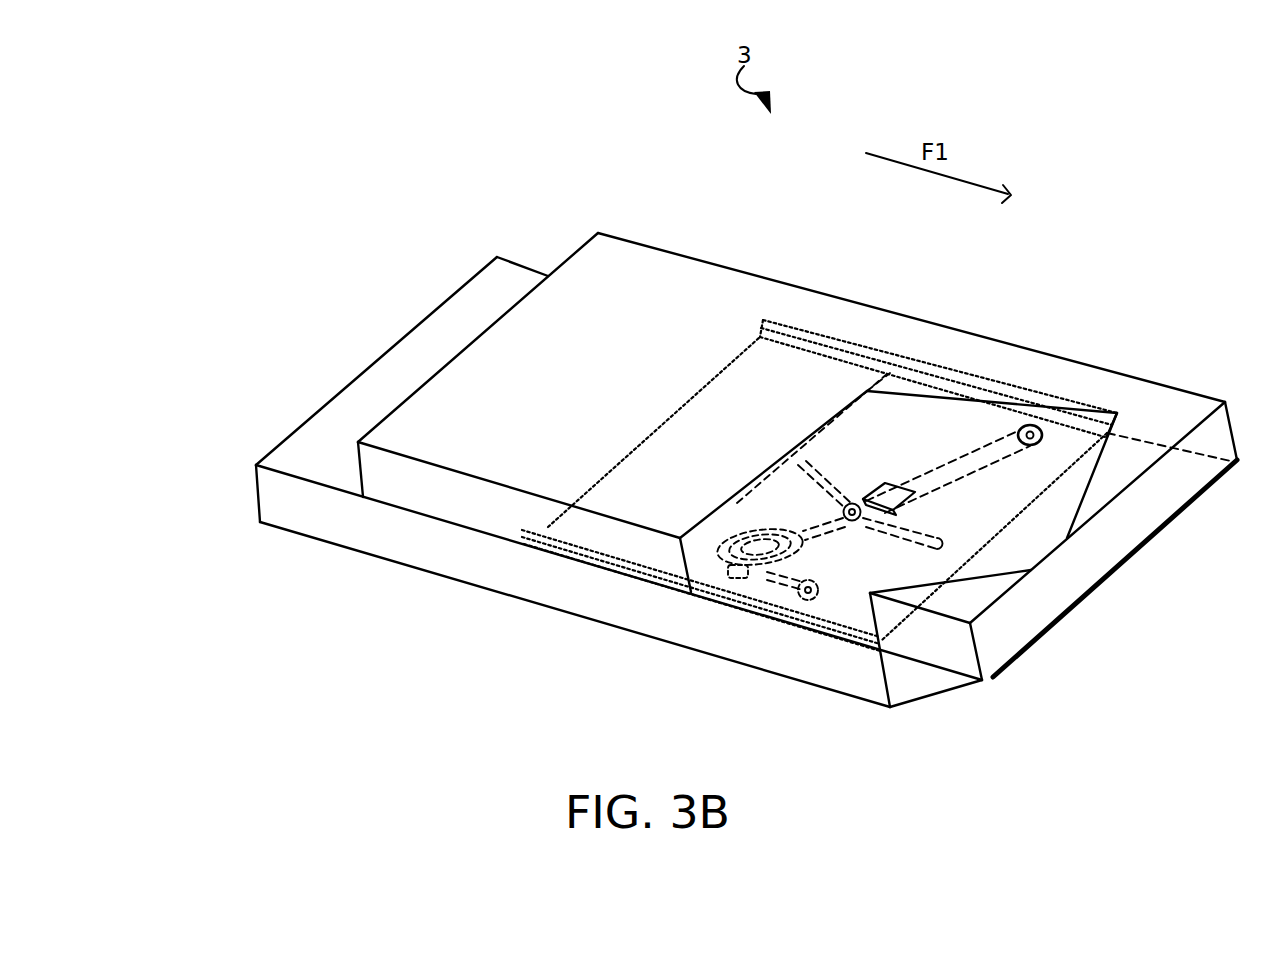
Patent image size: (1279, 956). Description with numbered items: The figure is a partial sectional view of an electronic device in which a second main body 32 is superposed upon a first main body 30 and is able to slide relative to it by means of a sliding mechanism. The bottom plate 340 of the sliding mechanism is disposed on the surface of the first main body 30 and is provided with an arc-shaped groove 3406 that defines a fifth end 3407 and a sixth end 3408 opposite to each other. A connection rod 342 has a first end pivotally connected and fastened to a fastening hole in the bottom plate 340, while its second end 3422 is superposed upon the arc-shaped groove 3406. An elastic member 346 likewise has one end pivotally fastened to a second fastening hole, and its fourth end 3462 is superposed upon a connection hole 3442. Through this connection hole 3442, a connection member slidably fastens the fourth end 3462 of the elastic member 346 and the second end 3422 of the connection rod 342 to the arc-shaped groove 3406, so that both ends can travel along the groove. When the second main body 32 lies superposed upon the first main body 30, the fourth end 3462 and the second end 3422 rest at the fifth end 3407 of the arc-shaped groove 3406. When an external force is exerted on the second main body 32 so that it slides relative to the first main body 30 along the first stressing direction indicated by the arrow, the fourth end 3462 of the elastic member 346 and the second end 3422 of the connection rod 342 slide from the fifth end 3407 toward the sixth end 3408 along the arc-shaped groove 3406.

The first main body 30 is at (397, 573).
The second main body 32 is at (627, 241).
The bottom plate 340 is at (570, 544).
The connection rod 342 is at (1140, 552).
The elastic member 346 is at (770, 566).
The fourth end 3462 is at (840, 535).
The arc-shaped groove 3406 is at (897, 535).
The fifth end 3407 is at (798, 465).
The sixth end 3408 is at (943, 545).
The second end 3422 is at (857, 503).
The connection hole 3442 is at (873, 483).